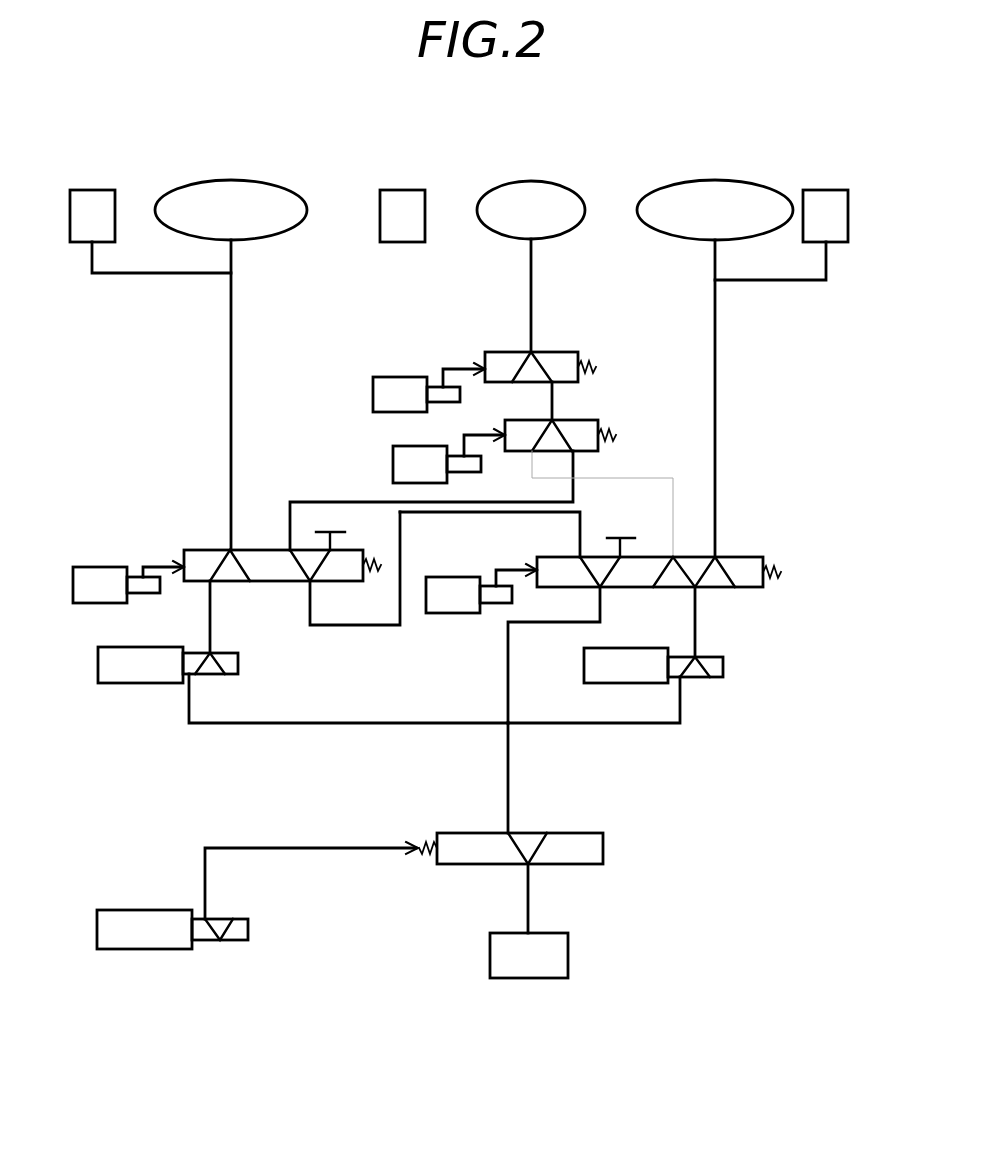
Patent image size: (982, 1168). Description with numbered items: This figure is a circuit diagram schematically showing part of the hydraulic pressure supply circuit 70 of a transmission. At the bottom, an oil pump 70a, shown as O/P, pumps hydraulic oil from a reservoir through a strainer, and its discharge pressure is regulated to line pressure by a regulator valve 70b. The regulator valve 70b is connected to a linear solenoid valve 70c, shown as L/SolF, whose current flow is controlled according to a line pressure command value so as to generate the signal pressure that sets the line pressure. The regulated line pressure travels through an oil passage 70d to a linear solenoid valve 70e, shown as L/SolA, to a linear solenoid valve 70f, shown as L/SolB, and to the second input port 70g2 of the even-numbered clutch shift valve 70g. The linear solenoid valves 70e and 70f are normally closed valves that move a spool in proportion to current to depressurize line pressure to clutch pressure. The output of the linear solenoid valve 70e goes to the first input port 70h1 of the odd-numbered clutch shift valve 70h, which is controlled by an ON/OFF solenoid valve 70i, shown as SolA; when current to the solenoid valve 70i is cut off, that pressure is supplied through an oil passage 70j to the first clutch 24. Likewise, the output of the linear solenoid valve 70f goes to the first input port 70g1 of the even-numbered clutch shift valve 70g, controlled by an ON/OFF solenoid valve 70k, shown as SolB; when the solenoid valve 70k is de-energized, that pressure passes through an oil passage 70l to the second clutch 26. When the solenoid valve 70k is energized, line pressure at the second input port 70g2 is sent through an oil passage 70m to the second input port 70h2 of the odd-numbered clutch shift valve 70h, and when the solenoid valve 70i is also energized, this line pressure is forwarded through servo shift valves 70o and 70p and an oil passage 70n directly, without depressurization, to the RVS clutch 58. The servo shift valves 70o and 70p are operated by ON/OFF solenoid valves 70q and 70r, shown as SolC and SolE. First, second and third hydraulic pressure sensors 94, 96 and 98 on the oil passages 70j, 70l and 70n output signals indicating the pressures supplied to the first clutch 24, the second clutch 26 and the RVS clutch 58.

The hydraulic pressure supply circuit 70 is at (798, 367).
The first clutch 24 is at (241, 181).
The second clutch 26 is at (733, 181).
The RVS clutch 58 is at (548, 181).
The first hydraulic pressure sensor 94 is at (92, 216).
The second hydraulic pressure sensor 96 is at (825, 216).
The third hydraulic pressure sensor 98 is at (402, 216).
The oil pump 70a is at (560, 933).
The regulator valve 70b is at (603, 843).
The linear solenoid valve 70c is at (117, 910).
The oil passage 70d is at (509, 775).
The linear solenoid valve 70e is at (98, 660).
The linear solenoid valve 70f is at (584, 668).
The even-numbered clutch shift valve 70g is at (748, 557).
The first input port 70g1 is at (697, 593).
The second input port 70g2 is at (600, 587).
The odd-numbered clutch shift valve 70h is at (205, 550).
The first input port 70h1 is at (210, 582).
The second input port 70h2 is at (310, 582).
The ON/OFF solenoid valve 70i is at (107, 567).
The oil passage 70j is at (232, 302).
The ON/OFF solenoid valve 70k is at (441, 577).
The oil passage 70l is at (716, 302).
The oil passage 70m is at (477, 512).
The oil passage 70n is at (532, 302).
The servo shift valve 70o is at (580, 420).
The servo shift valve 70p is at (572, 352).
The ON/OFF solenoid valve 70q is at (400, 446).
The ON/OFF solenoid valve 70r is at (393, 377).